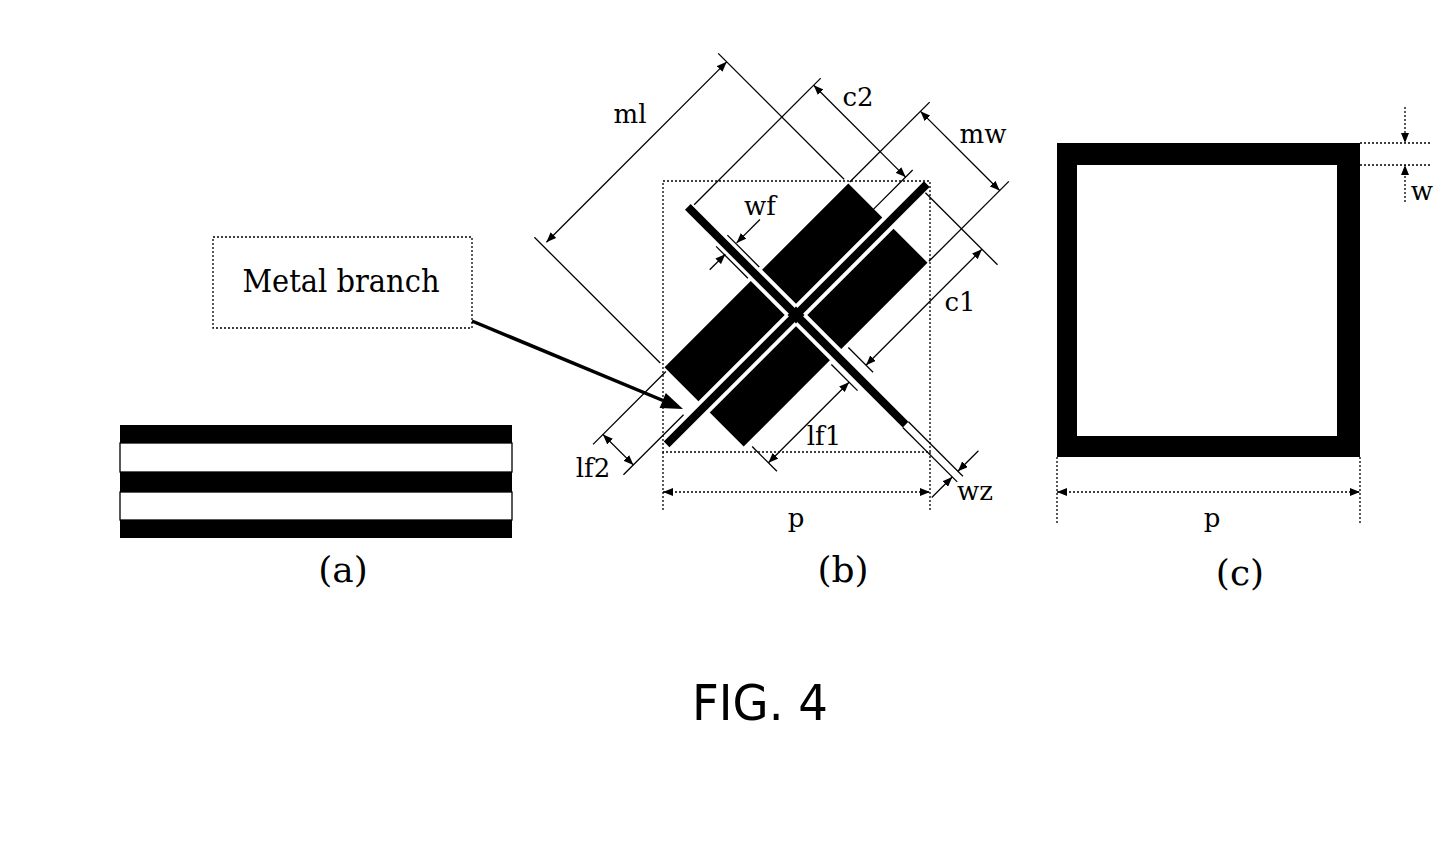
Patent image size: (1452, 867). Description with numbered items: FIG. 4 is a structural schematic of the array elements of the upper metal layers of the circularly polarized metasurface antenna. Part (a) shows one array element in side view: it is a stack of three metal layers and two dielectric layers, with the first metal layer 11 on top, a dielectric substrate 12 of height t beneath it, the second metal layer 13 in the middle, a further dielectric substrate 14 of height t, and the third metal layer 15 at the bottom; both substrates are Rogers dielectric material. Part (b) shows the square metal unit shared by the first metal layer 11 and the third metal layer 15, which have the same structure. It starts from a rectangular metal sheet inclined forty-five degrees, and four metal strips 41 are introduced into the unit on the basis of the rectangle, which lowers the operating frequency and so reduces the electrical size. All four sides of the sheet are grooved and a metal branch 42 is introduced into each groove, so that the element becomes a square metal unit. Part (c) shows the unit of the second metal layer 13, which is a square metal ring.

The first metal layer 11 is at (175, 425).
The dielectric substrate 12 is at (120, 458).
The second metal layer 13 is at (512, 483).
The dielectric substrate 14 is at (120, 507).
The third metal layer 15 is at (512, 533).
The metal strip 41 is at (815, 215).
The metal branch 42 is at (703, 213).